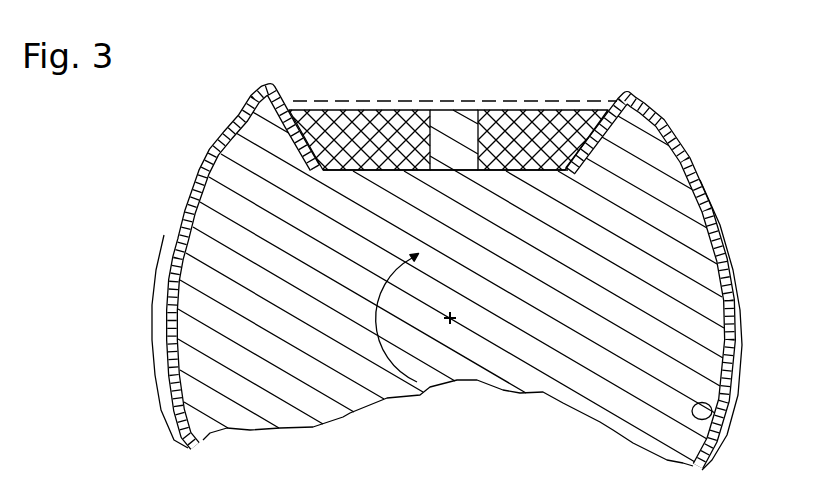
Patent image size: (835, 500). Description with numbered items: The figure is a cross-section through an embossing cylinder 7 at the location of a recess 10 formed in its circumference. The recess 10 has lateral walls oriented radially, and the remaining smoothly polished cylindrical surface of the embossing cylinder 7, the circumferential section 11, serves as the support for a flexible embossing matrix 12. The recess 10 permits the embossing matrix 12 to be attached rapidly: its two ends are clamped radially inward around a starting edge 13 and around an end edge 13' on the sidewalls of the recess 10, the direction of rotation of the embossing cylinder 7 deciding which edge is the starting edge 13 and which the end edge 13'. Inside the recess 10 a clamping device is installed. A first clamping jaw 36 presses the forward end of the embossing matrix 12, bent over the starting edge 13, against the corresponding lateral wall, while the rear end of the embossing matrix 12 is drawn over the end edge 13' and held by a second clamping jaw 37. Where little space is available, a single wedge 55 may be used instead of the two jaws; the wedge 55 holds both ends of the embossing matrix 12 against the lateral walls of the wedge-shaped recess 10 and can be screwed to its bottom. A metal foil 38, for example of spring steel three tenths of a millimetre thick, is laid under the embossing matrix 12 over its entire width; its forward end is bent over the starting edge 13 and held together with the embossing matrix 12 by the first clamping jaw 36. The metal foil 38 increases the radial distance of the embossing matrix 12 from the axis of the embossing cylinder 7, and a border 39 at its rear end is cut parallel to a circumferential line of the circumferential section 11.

The embossing cylinder 7 is at (203, 250).
The recess 10 is at (445, 178).
The circumferential section 11 is at (723, 362).
The embossing matrix 12 is at (663, 120).
The starting edge 13 is at (248, 115).
The end edge 13' is at (634, 115).
The first clamping jaw 36 is at (421, 106).
The second clamping jaw 37 is at (492, 124).
The metal foil 38 is at (208, 152).
The border 39 is at (712, 412).
The wedge 55 is at (364, 110).